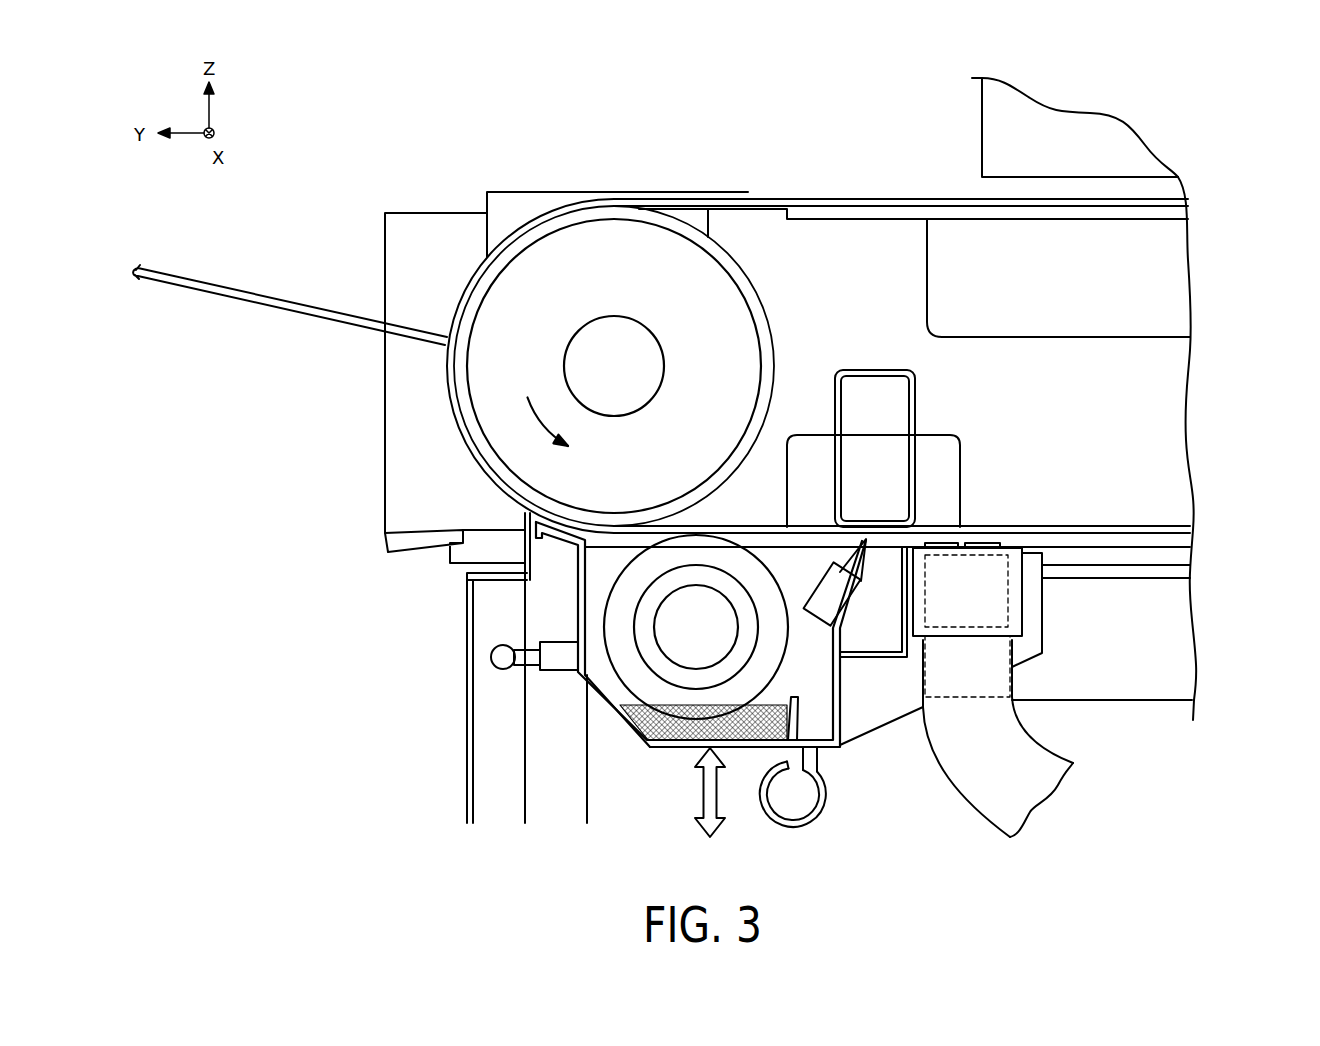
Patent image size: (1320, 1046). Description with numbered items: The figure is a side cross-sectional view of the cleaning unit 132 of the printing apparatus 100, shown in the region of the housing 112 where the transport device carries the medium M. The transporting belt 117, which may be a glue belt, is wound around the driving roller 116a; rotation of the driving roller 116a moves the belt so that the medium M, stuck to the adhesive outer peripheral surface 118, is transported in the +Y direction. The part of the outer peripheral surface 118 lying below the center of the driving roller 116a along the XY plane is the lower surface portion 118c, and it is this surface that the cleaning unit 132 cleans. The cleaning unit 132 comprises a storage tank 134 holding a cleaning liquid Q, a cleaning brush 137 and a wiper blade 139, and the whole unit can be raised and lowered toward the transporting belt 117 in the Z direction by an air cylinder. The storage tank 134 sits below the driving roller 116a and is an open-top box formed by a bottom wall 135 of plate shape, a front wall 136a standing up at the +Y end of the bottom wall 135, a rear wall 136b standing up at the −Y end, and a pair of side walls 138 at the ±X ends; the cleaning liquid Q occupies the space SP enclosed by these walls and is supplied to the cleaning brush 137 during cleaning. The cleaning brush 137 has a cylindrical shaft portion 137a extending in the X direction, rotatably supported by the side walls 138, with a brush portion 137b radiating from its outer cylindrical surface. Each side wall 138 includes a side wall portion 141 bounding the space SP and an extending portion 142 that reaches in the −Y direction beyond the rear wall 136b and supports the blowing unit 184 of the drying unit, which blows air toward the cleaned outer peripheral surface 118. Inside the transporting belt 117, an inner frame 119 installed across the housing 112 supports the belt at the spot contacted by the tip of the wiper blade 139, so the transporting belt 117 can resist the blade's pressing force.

The image forming apparatus 100 is at (387, 162).
The medium M is at (263, 293).
The driving roller 116a is at (763, 308).
The transporting belt 117 is at (448, 387).
The outer peripheral surface 118 is at (463, 442).
The lower surface portion 118c is at (1140, 543).
The inner frame 119 is at (918, 397).
The housing 112 is at (1157, 647).
The side wall portion 141 is at (597, 587).
The front wall 136a is at (617, 627).
The brush portion 137b is at (540, 642).
The cleaning brush 137 is at (635, 672).
The shaft portion 137a is at (743, 583).
The cleaning unit 132 is at (607, 708).
The storage tank 134 is at (632, 733).
The bottom wall 135 is at (678, 752).
The cleaning liquid Q is at (762, 702).
The space SP is at (800, 670).
The wiper blade 139 is at (858, 557).
The side walls 138 is at (880, 655).
The blowing unit 184 is at (1023, 587).
The extending portion 142 is at (1032, 643).
The rear wall 136b is at (922, 643).